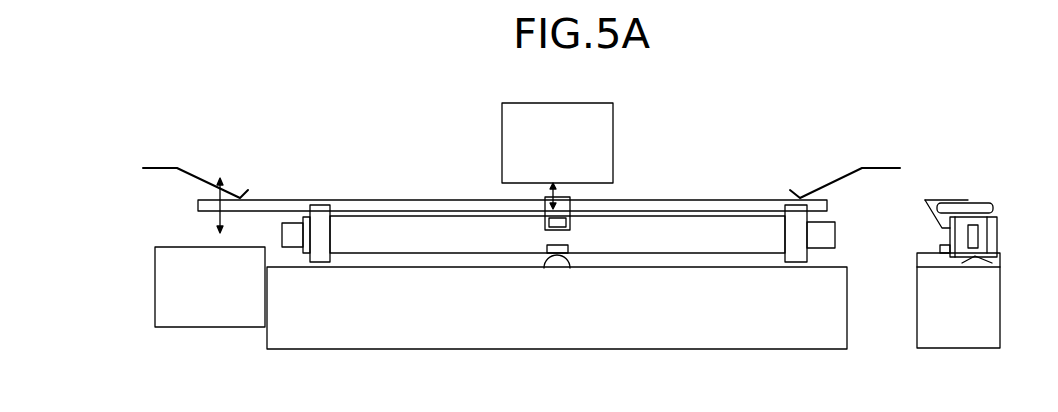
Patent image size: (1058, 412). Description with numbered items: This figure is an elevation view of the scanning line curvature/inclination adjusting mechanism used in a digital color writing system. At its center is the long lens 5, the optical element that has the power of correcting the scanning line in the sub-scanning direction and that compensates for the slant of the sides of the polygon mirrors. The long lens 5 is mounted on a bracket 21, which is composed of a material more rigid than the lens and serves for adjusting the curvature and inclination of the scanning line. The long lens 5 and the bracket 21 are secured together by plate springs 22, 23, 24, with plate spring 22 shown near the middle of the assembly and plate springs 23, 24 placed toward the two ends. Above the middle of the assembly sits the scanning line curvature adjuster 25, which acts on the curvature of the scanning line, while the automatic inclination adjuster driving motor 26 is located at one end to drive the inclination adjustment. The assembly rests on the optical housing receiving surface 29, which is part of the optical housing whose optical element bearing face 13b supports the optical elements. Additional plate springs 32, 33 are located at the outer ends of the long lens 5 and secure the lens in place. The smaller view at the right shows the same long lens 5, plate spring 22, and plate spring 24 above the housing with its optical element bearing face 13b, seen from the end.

The long lens 5 is at (408, 216).
The optical element bearing face 13b is at (697, 337).
The bracket 21 is at (637, 198).
The plate spring 22 is at (573, 213).
The plate spring 23 is at (323, 205).
The plate spring 24 is at (778, 207).
The scanning line curvature adjuster 25 is at (612, 108).
The automatic inclination adjuster driving motor 26 is at (193, 330).
The optical housing receiving surface 29 is at (547, 243).
The plate spring 32 is at (193, 173).
The plate spring 33 is at (880, 165).